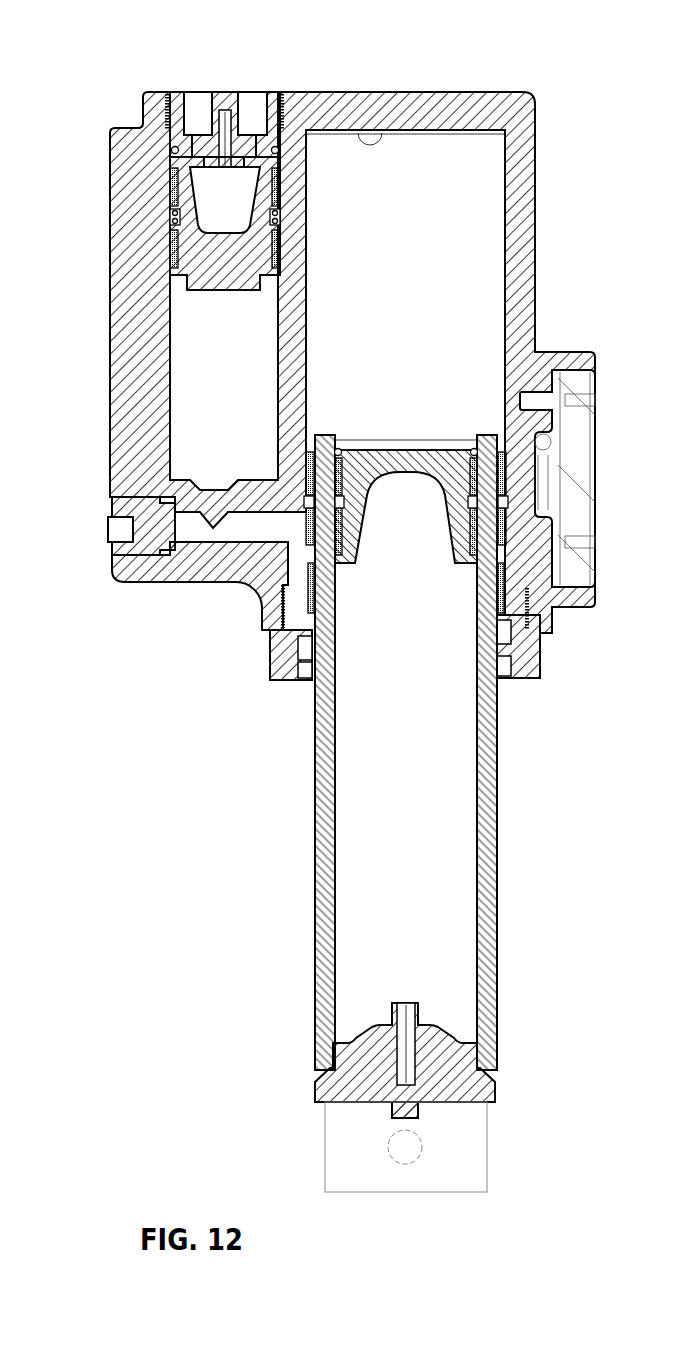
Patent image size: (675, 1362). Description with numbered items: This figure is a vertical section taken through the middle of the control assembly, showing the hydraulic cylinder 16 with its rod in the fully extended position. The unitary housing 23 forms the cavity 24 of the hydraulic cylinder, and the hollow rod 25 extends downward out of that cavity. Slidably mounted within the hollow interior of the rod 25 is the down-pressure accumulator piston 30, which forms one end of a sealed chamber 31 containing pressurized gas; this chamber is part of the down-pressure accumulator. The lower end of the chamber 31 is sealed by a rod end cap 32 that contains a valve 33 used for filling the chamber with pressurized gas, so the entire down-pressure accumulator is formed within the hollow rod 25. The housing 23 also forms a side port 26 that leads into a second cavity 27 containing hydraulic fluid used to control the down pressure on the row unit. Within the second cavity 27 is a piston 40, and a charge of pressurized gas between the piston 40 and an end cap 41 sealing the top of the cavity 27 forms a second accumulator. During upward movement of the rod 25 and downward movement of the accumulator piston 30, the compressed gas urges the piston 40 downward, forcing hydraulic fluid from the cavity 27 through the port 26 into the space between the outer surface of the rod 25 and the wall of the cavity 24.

The hydraulic cylinder 16 is at (535, 242).
The unitary housing 23 is at (322, 601).
The cavity 24 is at (492, 189).
The hollow rod 25 is at (497, 727).
The side port 26 is at (197, 545).
The second cavity 27 is at (187, 428).
The down-pressure accumulator piston 30 is at (384, 458).
The sealed chamber 31 is at (418, 807).
The rod end cap 32 is at (497, 1086).
The valve 33 is at (418, 1114).
The piston 40 is at (205, 292).
The end cap 41 is at (172, 92).